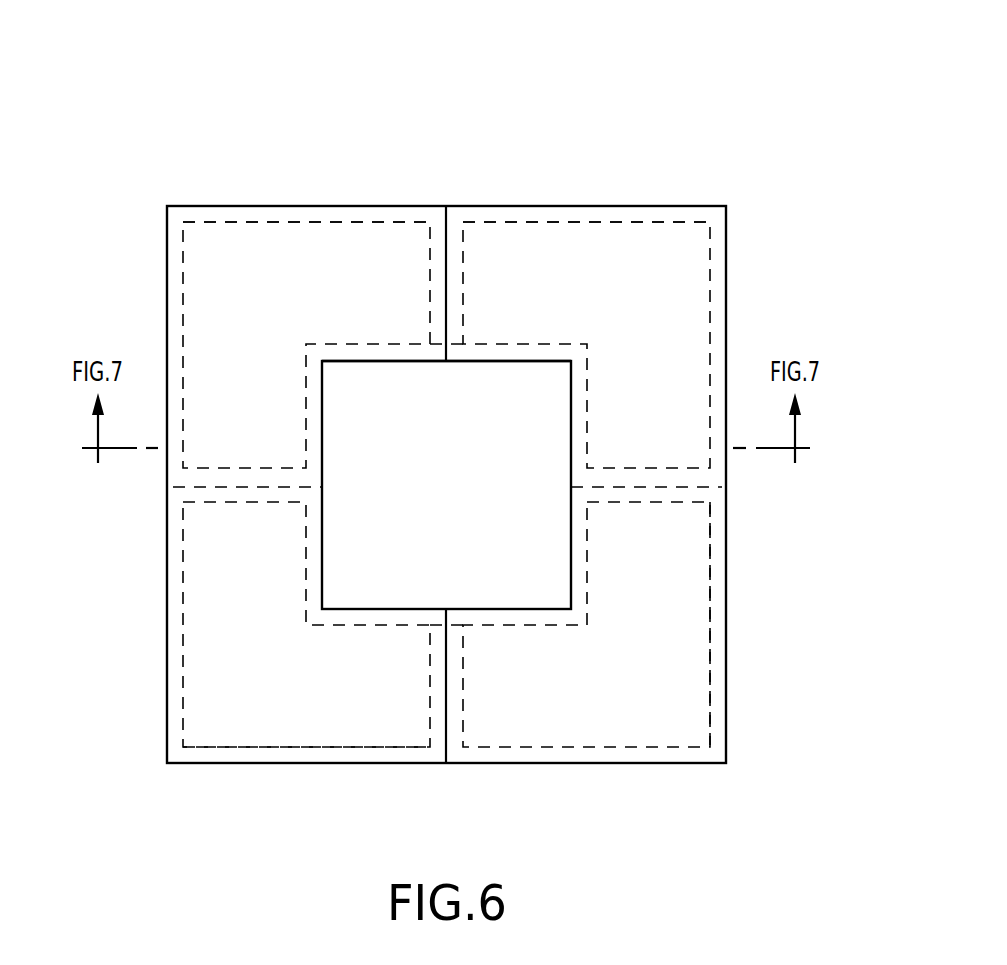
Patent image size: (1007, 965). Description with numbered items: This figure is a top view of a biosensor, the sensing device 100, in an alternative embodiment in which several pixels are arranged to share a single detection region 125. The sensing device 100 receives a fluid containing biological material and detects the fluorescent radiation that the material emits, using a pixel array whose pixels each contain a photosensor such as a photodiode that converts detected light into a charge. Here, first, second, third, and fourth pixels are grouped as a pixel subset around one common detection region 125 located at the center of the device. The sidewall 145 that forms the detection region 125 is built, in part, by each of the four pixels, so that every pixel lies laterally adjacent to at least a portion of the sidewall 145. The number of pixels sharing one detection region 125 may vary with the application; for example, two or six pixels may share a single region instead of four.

The sensing device 100 is at (116, 128).
The detection region 125 is at (383, 405).
The sidewall 145 is at (347, 360).